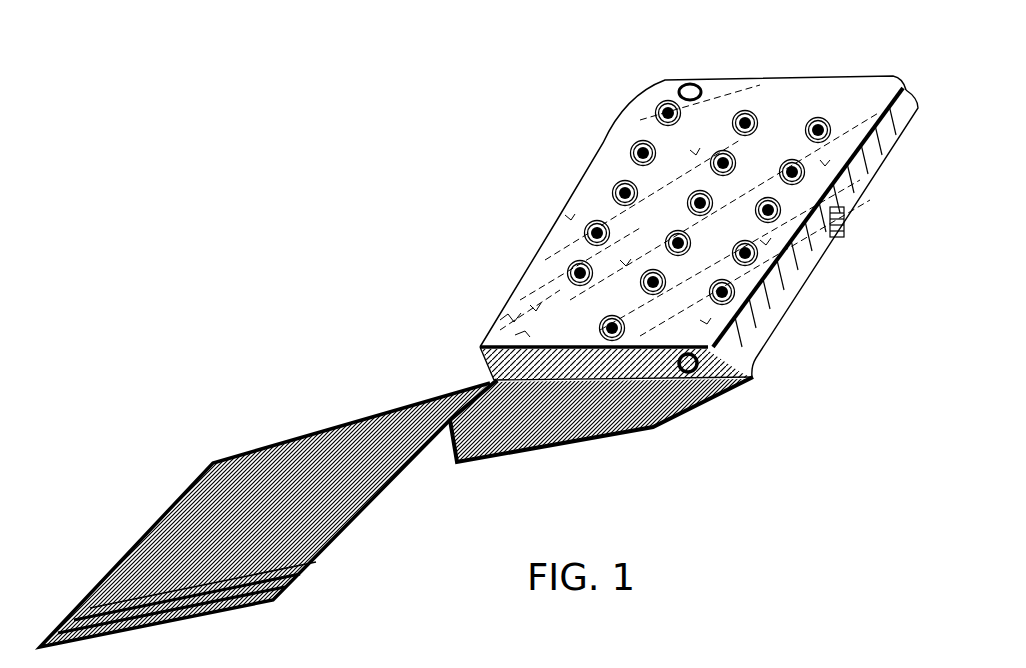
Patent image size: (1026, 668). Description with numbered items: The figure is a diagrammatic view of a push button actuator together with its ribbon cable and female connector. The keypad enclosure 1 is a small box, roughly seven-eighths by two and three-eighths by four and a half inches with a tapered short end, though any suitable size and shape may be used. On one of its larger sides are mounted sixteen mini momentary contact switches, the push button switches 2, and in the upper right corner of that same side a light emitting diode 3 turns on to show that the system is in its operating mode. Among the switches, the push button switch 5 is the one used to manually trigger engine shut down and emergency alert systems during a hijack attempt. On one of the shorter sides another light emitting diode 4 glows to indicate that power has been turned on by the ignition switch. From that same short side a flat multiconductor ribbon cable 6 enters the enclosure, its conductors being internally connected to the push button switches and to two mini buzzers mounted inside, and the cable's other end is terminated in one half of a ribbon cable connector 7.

The keypad enclosure 1 is at (699, 228).
The push button switches 2 is at (607, 140).
The light emitting diode 3 is at (687, 43).
The light emitting diode 4 is at (767, 413).
The push button switch 5 is at (590, 330).
The ribbon cable 6 is at (601, 425).
The ribbon cable connector 7 is at (265, 515).